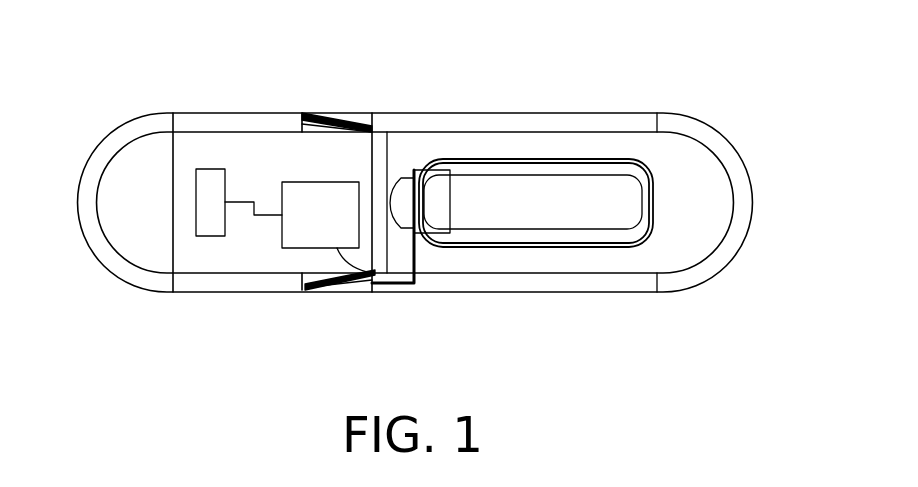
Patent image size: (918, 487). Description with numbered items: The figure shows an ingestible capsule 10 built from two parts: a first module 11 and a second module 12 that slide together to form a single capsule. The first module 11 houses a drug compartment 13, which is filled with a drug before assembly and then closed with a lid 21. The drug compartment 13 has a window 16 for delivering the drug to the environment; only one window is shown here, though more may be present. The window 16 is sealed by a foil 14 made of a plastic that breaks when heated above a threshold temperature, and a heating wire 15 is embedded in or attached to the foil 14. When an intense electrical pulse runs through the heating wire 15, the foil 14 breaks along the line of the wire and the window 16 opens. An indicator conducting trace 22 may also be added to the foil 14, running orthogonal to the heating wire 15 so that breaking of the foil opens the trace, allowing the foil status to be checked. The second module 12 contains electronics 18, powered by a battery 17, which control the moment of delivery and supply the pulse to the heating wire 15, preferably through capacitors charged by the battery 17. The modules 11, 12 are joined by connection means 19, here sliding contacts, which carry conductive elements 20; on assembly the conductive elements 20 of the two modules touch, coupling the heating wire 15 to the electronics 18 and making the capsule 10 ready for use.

The ingestible capsule 10 is at (103, 76).
The first module 11 is at (717, 125).
The second module 12 is at (110, 272).
The drug compartment 13 is at (492, 143).
The foil 14 is at (630, 202).
The heating wire 15 is at (556, 230).
The window 16 is at (498, 247).
The battery 17 is at (210, 168).
The electronics 18 is at (300, 237).
The connection means 19 is at (345, 113).
The conductive elements 20 is at (343, 293).
The lid 21 is at (390, 140).
The indicator conducting trace 22 is at (450, 207).